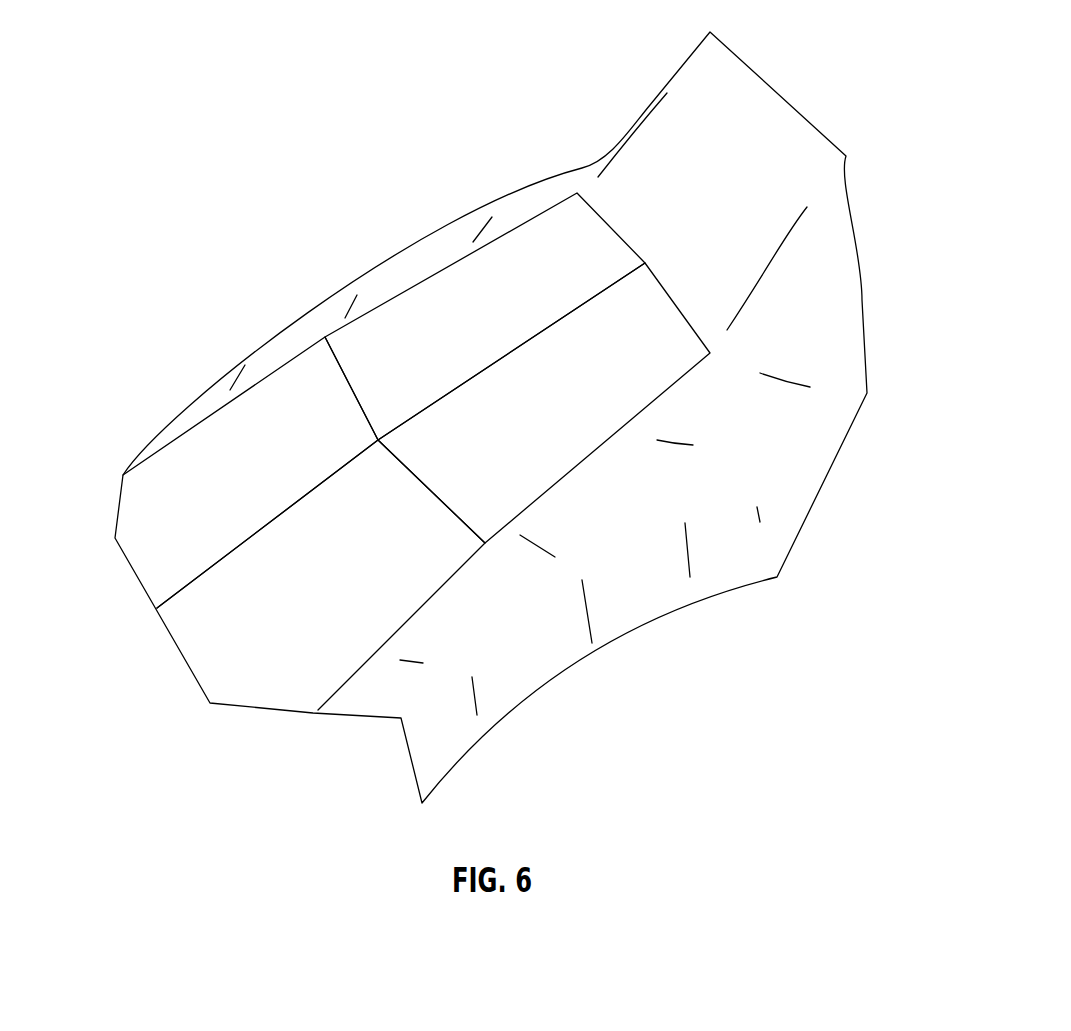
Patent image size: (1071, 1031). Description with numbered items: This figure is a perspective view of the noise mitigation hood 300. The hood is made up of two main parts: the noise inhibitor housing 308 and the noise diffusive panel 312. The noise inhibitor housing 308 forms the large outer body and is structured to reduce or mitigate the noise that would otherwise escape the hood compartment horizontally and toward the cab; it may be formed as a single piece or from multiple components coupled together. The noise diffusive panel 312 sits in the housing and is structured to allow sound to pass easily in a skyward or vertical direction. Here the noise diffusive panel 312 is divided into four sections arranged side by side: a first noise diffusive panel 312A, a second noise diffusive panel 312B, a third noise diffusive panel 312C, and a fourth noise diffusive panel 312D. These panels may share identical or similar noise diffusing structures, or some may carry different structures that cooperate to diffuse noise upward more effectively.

The noise mitigation hood 300 is at (113, 85).
The noise inhibitor housing 308 is at (822, 298).
The noise diffusive panel 312 is at (127, 667).
The first noise diffusive panel 312A is at (260, 479).
The second noise diffusive panel 312B is at (520, 309).
The third noise diffusive panel 312C is at (342, 596).
The fourth noise diffusive panel 312D is at (577, 412).